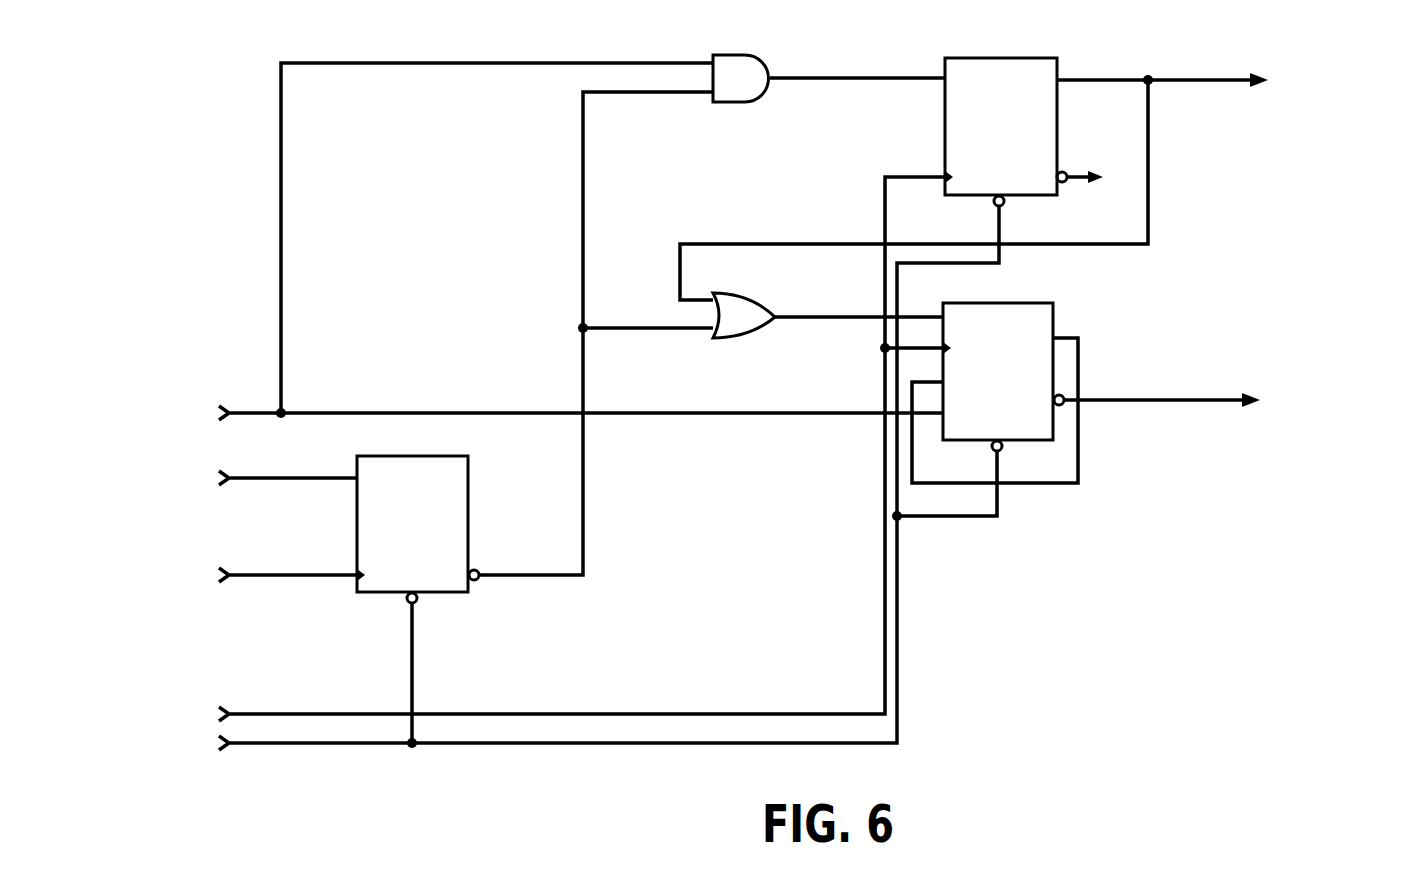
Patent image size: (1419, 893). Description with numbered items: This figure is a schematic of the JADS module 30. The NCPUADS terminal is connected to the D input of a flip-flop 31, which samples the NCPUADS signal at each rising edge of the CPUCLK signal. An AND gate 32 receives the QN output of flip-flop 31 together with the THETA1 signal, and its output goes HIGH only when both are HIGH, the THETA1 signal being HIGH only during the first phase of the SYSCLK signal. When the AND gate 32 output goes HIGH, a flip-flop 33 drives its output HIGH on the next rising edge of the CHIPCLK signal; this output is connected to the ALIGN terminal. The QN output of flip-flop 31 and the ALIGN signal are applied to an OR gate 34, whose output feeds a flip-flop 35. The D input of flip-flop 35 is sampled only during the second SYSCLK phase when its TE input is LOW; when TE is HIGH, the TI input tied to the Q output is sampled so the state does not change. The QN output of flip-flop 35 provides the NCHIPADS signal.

The JADS module 30 is at (248, 43).
The flip-flop 31 is at (437, 452).
The AND gate 32 is at (763, 55).
The flip-flop 33 is at (983, 58).
The OR gate 34 is at (760, 294).
The flip-flop 35 is at (965, 305).